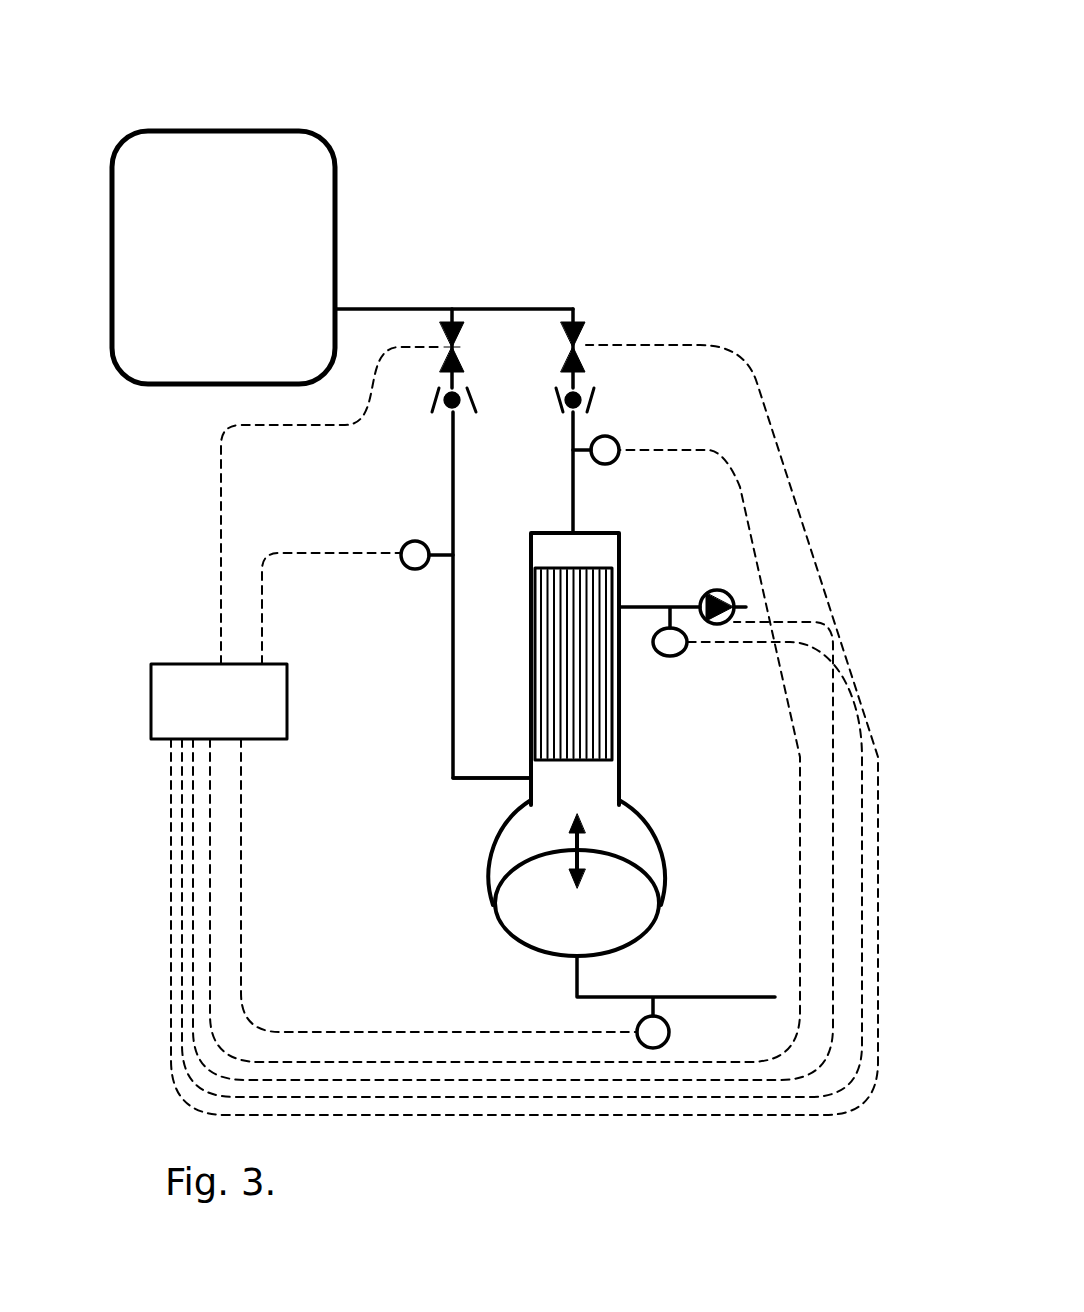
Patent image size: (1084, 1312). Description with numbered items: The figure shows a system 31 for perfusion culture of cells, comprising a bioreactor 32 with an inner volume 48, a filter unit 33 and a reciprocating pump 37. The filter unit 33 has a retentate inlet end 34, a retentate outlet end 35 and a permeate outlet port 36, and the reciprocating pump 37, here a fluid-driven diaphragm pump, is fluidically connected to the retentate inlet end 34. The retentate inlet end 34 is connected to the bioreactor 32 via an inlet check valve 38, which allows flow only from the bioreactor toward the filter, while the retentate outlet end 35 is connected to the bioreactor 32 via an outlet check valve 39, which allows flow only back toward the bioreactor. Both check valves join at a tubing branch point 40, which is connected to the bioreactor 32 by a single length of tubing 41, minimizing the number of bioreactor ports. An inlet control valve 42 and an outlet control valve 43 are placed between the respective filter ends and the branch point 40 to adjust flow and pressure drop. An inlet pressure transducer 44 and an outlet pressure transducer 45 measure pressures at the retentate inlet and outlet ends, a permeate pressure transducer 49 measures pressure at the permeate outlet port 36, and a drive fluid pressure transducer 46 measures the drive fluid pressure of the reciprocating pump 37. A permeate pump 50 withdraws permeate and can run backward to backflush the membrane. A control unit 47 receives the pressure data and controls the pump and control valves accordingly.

The system 31 is at (453, 103).
The bioreactor 32 is at (178, 131).
The filter unit 33 is at (620, 693).
The retentate inlet end 34 is at (528, 780).
The retentate outlet end 35 is at (581, 531).
The permeate outlet port 36 is at (642, 607).
The reciprocating pump 37 is at (495, 885).
The inlet check valve 38 is at (450, 413).
The outlet check valve 39 is at (575, 391).
The tubing branch point 40 is at (452, 307).
The length of tubing 41 is at (387, 308).
The inlet control valve 42 is at (455, 343).
The outlet control valve 43 is at (577, 343).
The inlet pressure transducer 44 is at (404, 570).
The outlet pressure transducer 45 is at (616, 440).
The drive fluid pressure transducer 46 is at (667, 1017).
The control unit 47 is at (258, 740).
The inner volume 48 is at (260, 203).
The permeate pressure transducer 49 is at (683, 652).
The permeate pump 50 is at (732, 598).